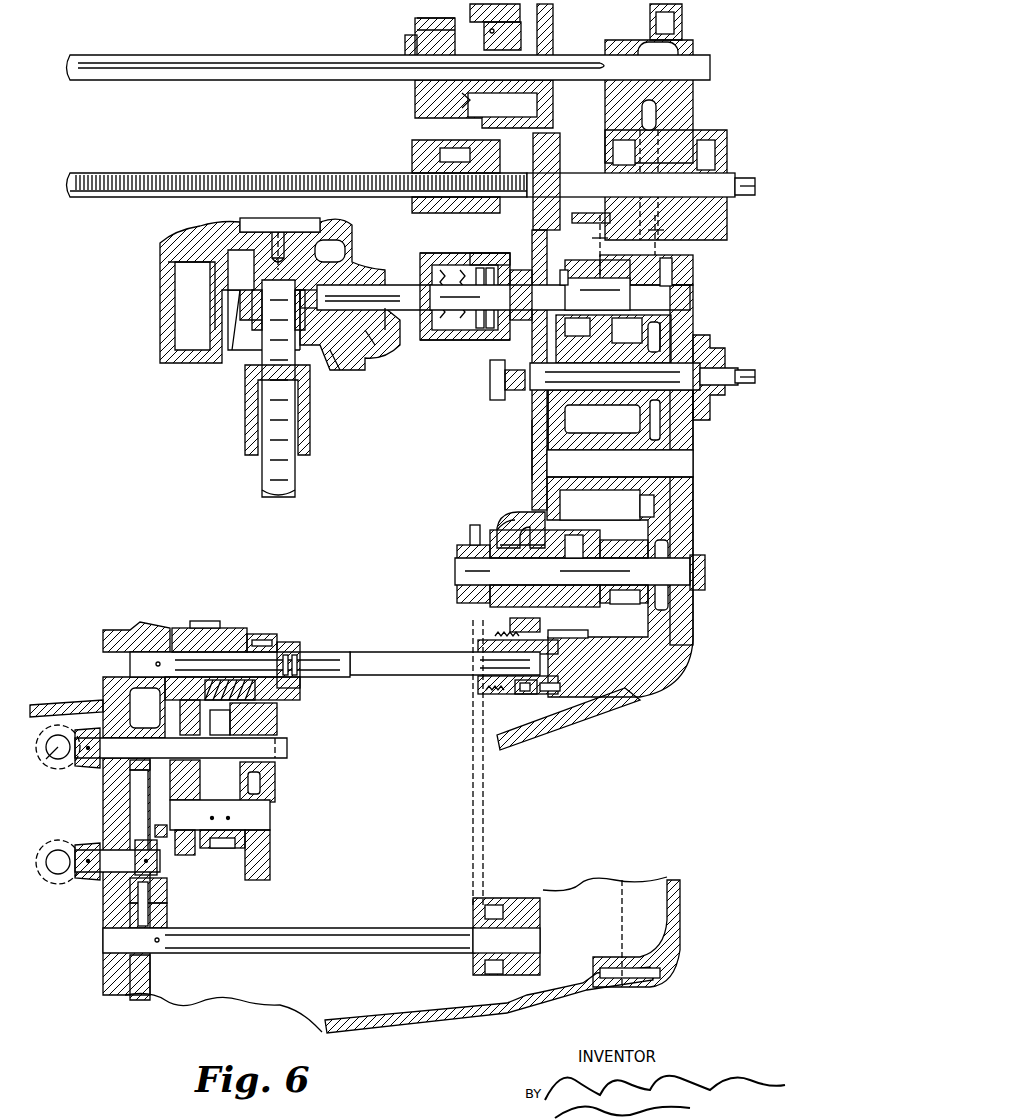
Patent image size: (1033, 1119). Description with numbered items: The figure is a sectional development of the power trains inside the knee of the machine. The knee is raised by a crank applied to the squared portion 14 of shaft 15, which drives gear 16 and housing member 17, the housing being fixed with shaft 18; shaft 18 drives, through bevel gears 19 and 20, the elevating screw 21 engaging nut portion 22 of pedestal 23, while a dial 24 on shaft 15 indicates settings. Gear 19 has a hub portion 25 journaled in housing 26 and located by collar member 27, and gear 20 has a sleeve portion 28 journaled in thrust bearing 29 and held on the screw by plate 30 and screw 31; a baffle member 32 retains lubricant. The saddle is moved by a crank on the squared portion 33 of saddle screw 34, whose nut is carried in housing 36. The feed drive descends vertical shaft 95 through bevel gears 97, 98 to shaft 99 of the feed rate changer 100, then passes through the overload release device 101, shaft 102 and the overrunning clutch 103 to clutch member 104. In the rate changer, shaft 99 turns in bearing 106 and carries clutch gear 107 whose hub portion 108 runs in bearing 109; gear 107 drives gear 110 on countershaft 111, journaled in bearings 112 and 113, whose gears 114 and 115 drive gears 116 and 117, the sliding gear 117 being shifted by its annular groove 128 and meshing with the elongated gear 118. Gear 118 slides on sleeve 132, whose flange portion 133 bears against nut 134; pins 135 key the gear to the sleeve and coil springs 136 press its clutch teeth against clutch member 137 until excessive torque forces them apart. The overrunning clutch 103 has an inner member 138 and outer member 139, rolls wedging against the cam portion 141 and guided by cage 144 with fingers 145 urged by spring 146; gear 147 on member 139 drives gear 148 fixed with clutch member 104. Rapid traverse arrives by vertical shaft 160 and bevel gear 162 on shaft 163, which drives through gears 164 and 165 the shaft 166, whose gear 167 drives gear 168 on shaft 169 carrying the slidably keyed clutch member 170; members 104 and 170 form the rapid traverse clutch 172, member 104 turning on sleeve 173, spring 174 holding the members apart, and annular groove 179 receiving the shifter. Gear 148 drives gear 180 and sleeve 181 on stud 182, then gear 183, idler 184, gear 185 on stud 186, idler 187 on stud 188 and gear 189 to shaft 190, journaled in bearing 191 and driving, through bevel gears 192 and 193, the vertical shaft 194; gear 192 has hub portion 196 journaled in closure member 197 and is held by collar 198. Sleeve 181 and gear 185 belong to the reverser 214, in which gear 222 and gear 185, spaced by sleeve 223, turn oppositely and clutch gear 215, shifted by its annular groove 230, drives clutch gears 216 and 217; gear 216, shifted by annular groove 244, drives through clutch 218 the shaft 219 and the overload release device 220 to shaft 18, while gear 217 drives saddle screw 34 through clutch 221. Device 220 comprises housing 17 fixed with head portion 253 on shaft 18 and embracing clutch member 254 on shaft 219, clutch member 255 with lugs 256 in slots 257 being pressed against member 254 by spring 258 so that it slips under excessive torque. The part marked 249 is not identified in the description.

The squared portion 14 is at (748, 370).
The shaft 15 is at (725, 368).
The gear 16 is at (494, 396).
The housing member 17 is at (441, 341).
The shaft 18 is at (407, 287).
The bevel gear 19 is at (348, 276).
The bevel gear 20 is at (330, 263).
The elevating screw 21 is at (268, 305).
The nut portion 22 is at (253, 327).
The pedestal 23 is at (247, 380).
The dial 24 is at (706, 413).
The sleeve or hub portion 25 is at (363, 337).
The housing 26 is at (341, 362).
The nut or collar member 27 is at (387, 330).
The sleeve portion 28 is at (247, 248).
The thrust bearing 29 is at (264, 258).
The plate 30 is at (262, 221).
The screw 31 is at (288, 224).
The baffle member 32 is at (247, 298).
The squared portion 33 is at (742, 180).
The saddle screw 34 is at (525, 174).
The housing 36 is at (548, 44).
The vertical shaft 95 is at (62, 745).
The bevel gear 97 is at (56, 766).
The bevel gear 98 is at (97, 762).
The shaft 99 is at (130, 750).
The feed rate changer 100 is at (137, 698).
The overload release device 101 is at (239, 618).
The shaft 102 is at (413, 656).
The overrunning clutch 103 is at (512, 693).
The clutch member 104 is at (500, 520).
The bearing 106 is at (110, 718).
The clutch gear 107 is at (240, 726).
The hub portion 108 is at (272, 728).
The bearing 109 is at (272, 782).
The gear 110 is at (258, 796).
The countershaft 111 is at (270, 818).
The bearing 112 is at (270, 836).
The bearing 113 is at (185, 856).
The gear 114 is at (205, 848).
The gear 115 is at (163, 838).
The gear 116 is at (145, 785).
The gear 117 is at (196, 777).
The elongated gear 118 is at (205, 628).
The annular groove 128 is at (192, 726).
The sleeve 132 is at (208, 620).
The flange portion 133 is at (270, 632).
The nut 134 is at (290, 641).
The pins 135 is at (259, 633).
The coil springs 136 is at (276, 688).
The clutch member 137 is at (160, 634).
The inner member 138 is at (478, 645).
The outer member 139 is at (536, 695).
The cam portion 141 is at (524, 696).
The cage 144 is at (505, 628).
The fingers 145 is at (500, 636).
The spring 146 is at (496, 686).
The gear 147 is at (556, 690).
The gear 148 is at (562, 644).
The vertical shaft 160 is at (50, 855).
The bevel gear 162 is at (95, 872).
The shaft 163 is at (115, 878).
The gear 164 is at (150, 892).
The gear 165 is at (150, 907).
The shaft 166 is at (345, 929).
The gear 167 is at (474, 906).
The gear 168 is at (462, 531).
The shaft 169 is at (466, 572).
The clutch member 170 is at (592, 545).
The rapid traverse clutch 172 is at (533, 525).
The sleeve 173 is at (510, 535).
The spring 174 is at (612, 538).
The annular groove 179 is at (615, 600).
The gear 180 is at (556, 497).
The sleeve 181 is at (633, 505).
The stud 182 is at (686, 463).
The gear 183 is at (652, 522).
The idler 184 is at (680, 432).
The gear 185 is at (672, 320).
The stud 186 is at (666, 360).
The idler 187 is at (660, 118).
The stud 188 is at (662, 138).
The gear 189 is at (668, 28).
The shaft 190 is at (670, 48).
The bearing 191 is at (690, 97).
The bevel gear 192 is at (470, 98).
The bevel gear 193 is at (522, 34).
The vertical shaft 194 is at (521, 10).
The sleeve or hub portion 196 is at (412, 28).
The closure member 197 is at (416, 40).
The collar 198 is at (416, 90).
The reverser 214 is at (547, 440).
The clutch gear 215 is at (586, 417).
The clutch gear 216 is at (598, 262).
The clutch gear 217 is at (615, 247).
The clutch 218 is at (658, 285).
The shaft 219 is at (691, 275).
The overload release device 220 is at (487, 262).
The clutch 221 is at (661, 235).
The gear 222 is at (533, 420).
The sleeve 223 is at (515, 336).
The annular groove 230 is at (590, 348).
The annular groove 244 is at (586, 271).
The plate 249 is at (584, 223).
The flange or head portion 253 is at (425, 263).
The clutch member 254 is at (520, 272).
The clutch member 255 is at (464, 340).
The lugs 256 is at (455, 341).
The slots 257 is at (445, 341).
The spring 258 is at (428, 341).